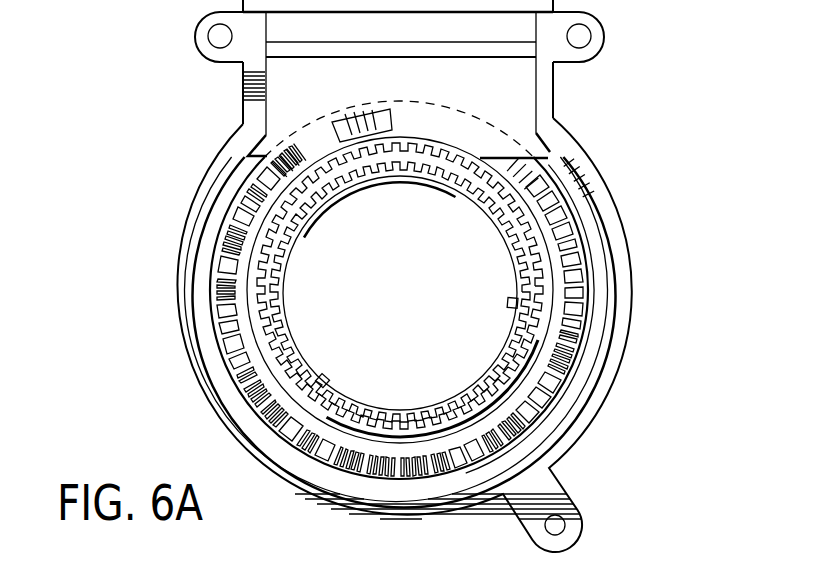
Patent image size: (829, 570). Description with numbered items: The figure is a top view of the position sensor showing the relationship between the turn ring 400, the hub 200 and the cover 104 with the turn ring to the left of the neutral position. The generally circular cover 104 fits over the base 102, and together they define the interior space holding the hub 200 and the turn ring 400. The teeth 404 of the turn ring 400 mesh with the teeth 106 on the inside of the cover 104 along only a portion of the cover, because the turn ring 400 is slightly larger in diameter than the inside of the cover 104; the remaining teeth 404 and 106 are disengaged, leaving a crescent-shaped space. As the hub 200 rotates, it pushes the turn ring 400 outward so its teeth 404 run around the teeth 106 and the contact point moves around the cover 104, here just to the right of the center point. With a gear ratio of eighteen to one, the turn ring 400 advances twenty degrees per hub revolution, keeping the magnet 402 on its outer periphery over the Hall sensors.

The base 102 is at (627, 345).
The cover 104 is at (342, 192).
The teeth 106 is at (483, 188).
The hub 200 is at (580, 242).
The turn ring 400 is at (277, 362).
The magnet 402 is at (320, 133).
The teeth 404 is at (267, 230).